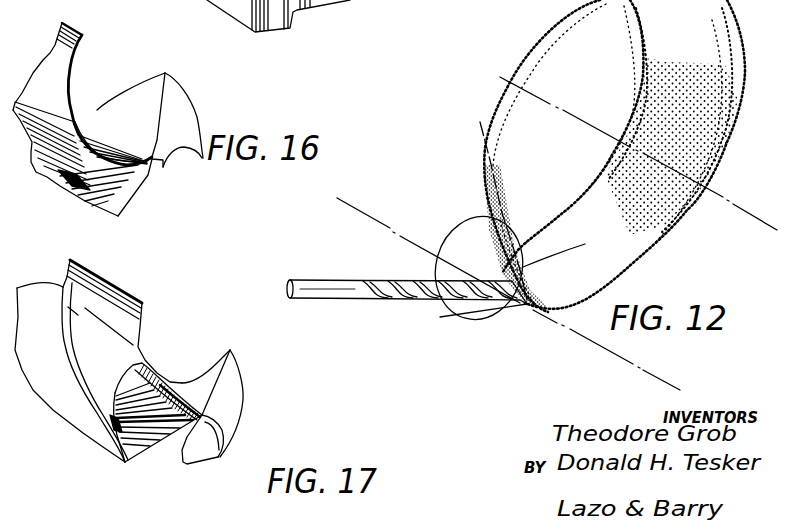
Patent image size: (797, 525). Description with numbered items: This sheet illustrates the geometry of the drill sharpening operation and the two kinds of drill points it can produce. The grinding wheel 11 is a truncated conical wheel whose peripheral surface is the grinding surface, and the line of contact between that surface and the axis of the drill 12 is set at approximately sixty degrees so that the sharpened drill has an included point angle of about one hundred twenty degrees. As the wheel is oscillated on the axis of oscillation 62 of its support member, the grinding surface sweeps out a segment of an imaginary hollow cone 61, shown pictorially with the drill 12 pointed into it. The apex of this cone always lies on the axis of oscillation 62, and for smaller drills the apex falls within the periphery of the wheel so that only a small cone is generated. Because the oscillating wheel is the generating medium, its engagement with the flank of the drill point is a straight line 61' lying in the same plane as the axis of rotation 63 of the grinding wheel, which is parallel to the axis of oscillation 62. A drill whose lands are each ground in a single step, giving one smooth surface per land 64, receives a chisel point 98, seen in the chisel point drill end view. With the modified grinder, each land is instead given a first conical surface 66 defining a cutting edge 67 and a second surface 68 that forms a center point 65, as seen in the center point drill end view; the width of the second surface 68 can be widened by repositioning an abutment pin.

In FIG. 12, the grinding wheel 11 is at (550, 40).
In FIG. 12, the drill 12 is at (372, 262).
In FIG. 12, the hollow cone 61 is at (483, 327).
In FIG. 12, the straight line 61' is at (568, 252).
In FIG. 12, the axis of oscillation 62 is at (603, 343).
In FIG. 12, the axis of rotation 63 is at (638, 156).
In FIG. 16, the land 64 is at (123, 163).
In FIG. 17, the center point 65 is at (199, 450).
In FIG. 17, the first conical surface 66 is at (190, 421).
In FIG. 17, the cutting edge 67 is at (211, 360).
In FIG. 17, the second surface 68 is at (176, 405).
In FIG. 16, the chisel point 98 is at (158, 165).